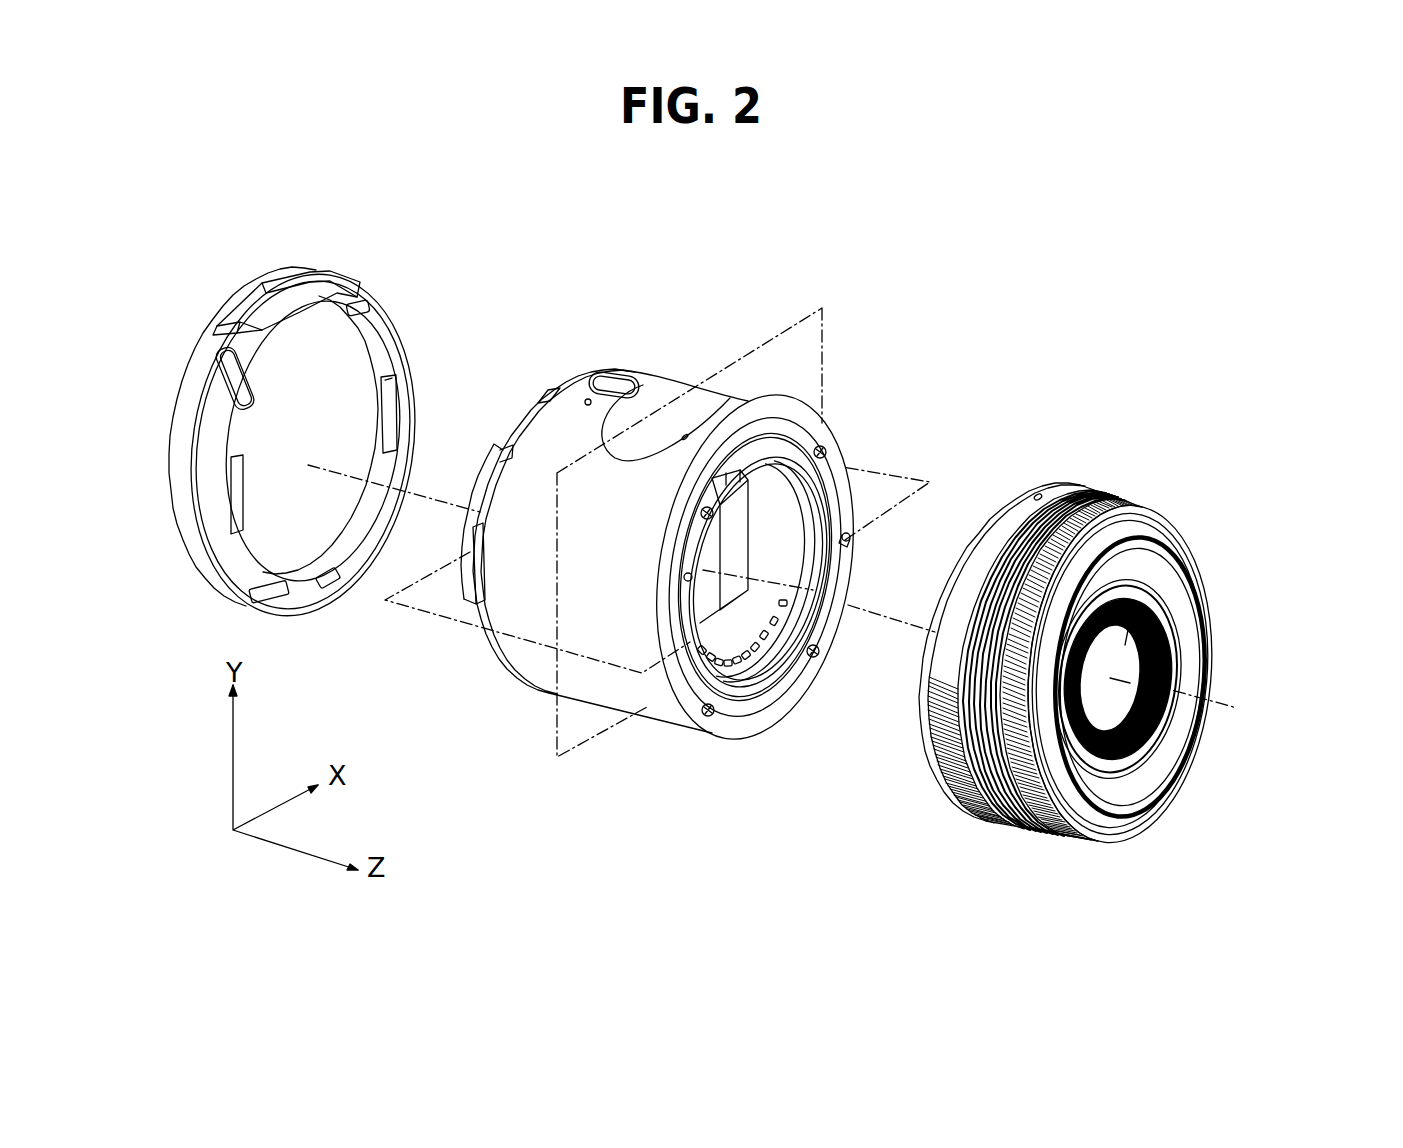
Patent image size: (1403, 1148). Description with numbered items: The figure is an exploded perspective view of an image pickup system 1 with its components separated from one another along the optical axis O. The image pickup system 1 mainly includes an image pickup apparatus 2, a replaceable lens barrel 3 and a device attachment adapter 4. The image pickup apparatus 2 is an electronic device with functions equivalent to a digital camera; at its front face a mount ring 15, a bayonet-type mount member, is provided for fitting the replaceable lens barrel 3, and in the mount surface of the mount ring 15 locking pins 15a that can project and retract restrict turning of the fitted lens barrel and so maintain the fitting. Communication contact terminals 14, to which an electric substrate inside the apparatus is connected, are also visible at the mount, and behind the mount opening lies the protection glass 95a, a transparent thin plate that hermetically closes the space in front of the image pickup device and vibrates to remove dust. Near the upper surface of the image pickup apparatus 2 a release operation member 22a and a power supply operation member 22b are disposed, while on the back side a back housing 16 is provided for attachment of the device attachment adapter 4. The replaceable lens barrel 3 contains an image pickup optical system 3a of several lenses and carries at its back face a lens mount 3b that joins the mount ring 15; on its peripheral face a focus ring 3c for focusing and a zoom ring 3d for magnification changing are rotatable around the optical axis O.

The image pickup system 1 is at (905, 207).
The image pickup apparatus 2 is at (760, 388).
The replaceable lens barrel 3 is at (1058, 477).
The image pickup optical system 3a is at (1150, 598).
The lens mount 3b is at (1000, 507).
The focus ring 3c is at (1137, 498).
The zoom ring 3d is at (1095, 490).
The device attachment adapter 4 is at (405, 317).
The communication contact terminals 14 is at (797, 623).
The mount ring 15 is at (827, 465).
The locking pins 15a is at (846, 538).
The back housing 16 is at (533, 424).
The release operation member 22a is at (668, 395).
The power supply operation member 22b is at (615, 385).
The protection glass 95a is at (728, 537).
The optical axis O is at (1237, 708).